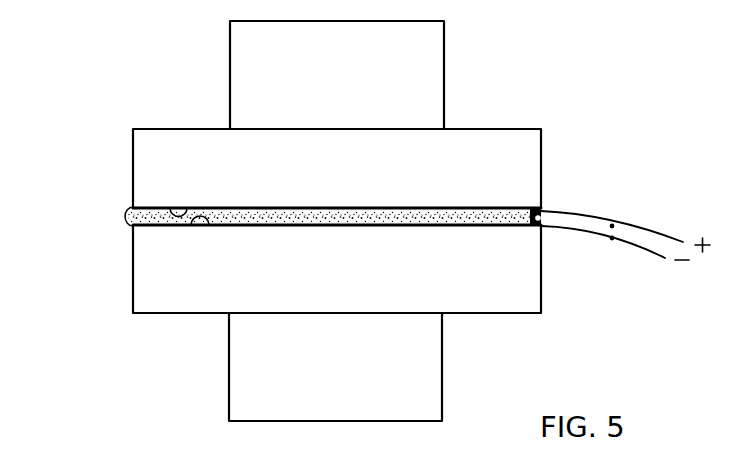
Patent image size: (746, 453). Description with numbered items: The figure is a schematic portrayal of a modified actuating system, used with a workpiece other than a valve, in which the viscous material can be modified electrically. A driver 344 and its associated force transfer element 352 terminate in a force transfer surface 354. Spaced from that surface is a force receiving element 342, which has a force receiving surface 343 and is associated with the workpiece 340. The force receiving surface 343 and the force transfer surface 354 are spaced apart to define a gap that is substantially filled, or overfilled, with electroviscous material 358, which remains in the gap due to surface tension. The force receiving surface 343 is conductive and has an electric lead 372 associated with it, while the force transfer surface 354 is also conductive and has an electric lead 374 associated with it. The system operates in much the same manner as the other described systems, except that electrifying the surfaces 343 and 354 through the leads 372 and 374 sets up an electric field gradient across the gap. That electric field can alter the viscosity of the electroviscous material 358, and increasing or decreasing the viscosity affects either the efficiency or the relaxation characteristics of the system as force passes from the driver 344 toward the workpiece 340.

The workpiece 340 is at (240, 387).
The force receiving element 342 is at (138, 289).
The force receiving surface 343 is at (192, 225).
The driver 344 is at (240, 70).
The force transfer element 352 is at (138, 148).
The force transfer surface 354 is at (167, 207).
The electroviscous material 358 is at (503, 211).
The electric lead 372 is at (612, 240).
The electric lead 374 is at (612, 226).